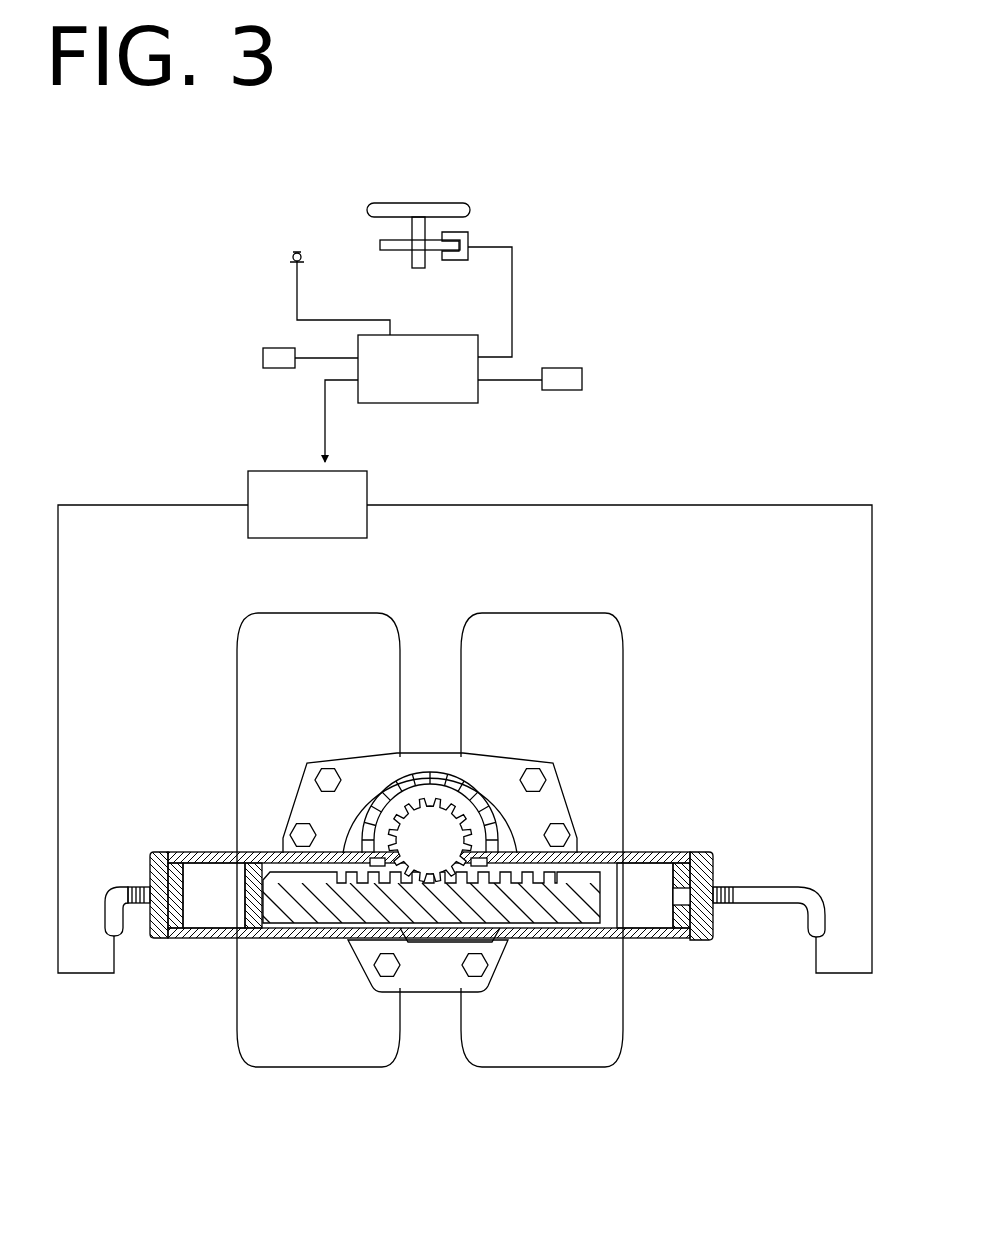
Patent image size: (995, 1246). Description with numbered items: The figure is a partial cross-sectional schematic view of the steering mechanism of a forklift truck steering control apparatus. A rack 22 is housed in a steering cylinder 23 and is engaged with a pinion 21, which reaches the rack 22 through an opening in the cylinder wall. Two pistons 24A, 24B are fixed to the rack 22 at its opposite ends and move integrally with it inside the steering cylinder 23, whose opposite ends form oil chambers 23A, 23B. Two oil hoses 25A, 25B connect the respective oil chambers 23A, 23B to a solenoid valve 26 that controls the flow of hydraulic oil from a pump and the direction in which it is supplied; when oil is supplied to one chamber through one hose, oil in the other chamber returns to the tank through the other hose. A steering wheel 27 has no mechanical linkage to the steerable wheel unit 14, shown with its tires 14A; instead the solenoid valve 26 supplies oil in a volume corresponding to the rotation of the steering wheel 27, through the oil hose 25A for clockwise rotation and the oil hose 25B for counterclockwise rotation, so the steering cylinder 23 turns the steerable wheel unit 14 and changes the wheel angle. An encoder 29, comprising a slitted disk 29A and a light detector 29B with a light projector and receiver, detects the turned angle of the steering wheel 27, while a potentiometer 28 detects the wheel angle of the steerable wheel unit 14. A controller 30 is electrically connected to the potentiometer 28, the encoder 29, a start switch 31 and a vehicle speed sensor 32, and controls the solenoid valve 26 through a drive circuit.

The steerable wheel unit 14 is at (636, 651).
The steered wheel (tire) 14A is at (247, 641).
The pinion 21 is at (442, 803).
The rack 22 is at (545, 926).
The steering cylinder 23 is at (669, 850).
The oil chamber 23A is at (205, 924).
The oil chamber 23B is at (648, 927).
The piston 24A is at (255, 852).
The piston 24B is at (612, 853).
The oil hose 25A is at (108, 888).
The oil hose 25B is at (782, 886).
The solenoid valve 26 is at (367, 479).
The steering wheel 27 is at (435, 204).
The potentiometer 28 is at (582, 380).
The encoder 29 is at (494, 226).
The disk 29A is at (447, 238).
The light detector 29B is at (471, 234).
The controller 30 is at (459, 335).
The start switch 31 is at (291, 258).
The vehicle speed sensor 32 is at (263, 358).